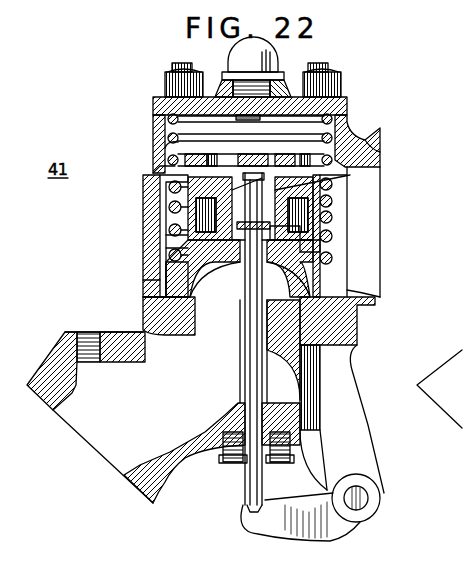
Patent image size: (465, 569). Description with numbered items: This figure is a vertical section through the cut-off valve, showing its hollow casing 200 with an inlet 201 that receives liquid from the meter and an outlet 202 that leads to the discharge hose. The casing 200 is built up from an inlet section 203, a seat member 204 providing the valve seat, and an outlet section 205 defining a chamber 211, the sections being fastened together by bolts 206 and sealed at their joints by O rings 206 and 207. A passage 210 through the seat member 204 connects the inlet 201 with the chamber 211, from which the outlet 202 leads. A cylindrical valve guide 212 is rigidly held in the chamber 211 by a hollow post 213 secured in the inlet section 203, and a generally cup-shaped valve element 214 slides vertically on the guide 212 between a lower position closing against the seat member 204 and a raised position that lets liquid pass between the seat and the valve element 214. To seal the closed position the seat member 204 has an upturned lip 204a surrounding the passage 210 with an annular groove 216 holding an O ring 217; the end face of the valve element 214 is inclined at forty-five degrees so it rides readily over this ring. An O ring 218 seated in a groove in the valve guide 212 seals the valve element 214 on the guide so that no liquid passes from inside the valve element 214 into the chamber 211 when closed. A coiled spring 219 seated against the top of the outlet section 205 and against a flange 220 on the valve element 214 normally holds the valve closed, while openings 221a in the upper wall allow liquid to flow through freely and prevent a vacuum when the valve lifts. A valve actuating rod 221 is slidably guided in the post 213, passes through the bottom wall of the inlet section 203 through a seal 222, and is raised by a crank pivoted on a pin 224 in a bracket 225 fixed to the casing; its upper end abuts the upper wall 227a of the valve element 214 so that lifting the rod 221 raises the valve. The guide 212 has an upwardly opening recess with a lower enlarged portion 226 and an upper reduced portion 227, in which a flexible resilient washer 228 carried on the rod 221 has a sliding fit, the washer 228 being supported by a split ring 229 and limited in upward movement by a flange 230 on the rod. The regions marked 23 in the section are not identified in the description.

The sectioned chamber portions 23 is at (239, 268).
The hollow casing 200 is at (68, 328).
The inlet 201 is at (140, 460).
The outlet 202 is at (362, 166).
The inlet section 203 is at (186, 455).
The seat member 204 is at (360, 318).
The upturned lip 204a is at (330, 285).
The outlet section 205 is at (352, 132).
The bolts 206 is at (162, 86).
The O ring 207 is at (160, 318).
The passage 210 is at (246, 330).
The chamber 211 is at (165, 216).
The cylindrical valve guide 212 is at (150, 176).
The hollow post 213 is at (243, 389).
The cup-shaped valve element 214 is at (382, 184).
The annular groove 216 is at (282, 300).
The O ring 217 is at (362, 290).
The O ring 218 is at (162, 266).
The coiled spring 219 is at (168, 125).
The flange 220 is at (150, 288).
The valve actuating rod 221 is at (246, 502).
The openings 221a is at (170, 152).
The seal 222 is at (290, 458).
The pin 224 is at (368, 506).
The bracket 225 is at (362, 420).
The lower enlarged portion 226 is at (322, 221).
The upper reduced portion 227 is at (162, 199).
The upper wall 227a is at (379, 150).
The washer 228 is at (160, 242).
The split ring 229 is at (242, 300).
The flange 230 is at (333, 201).